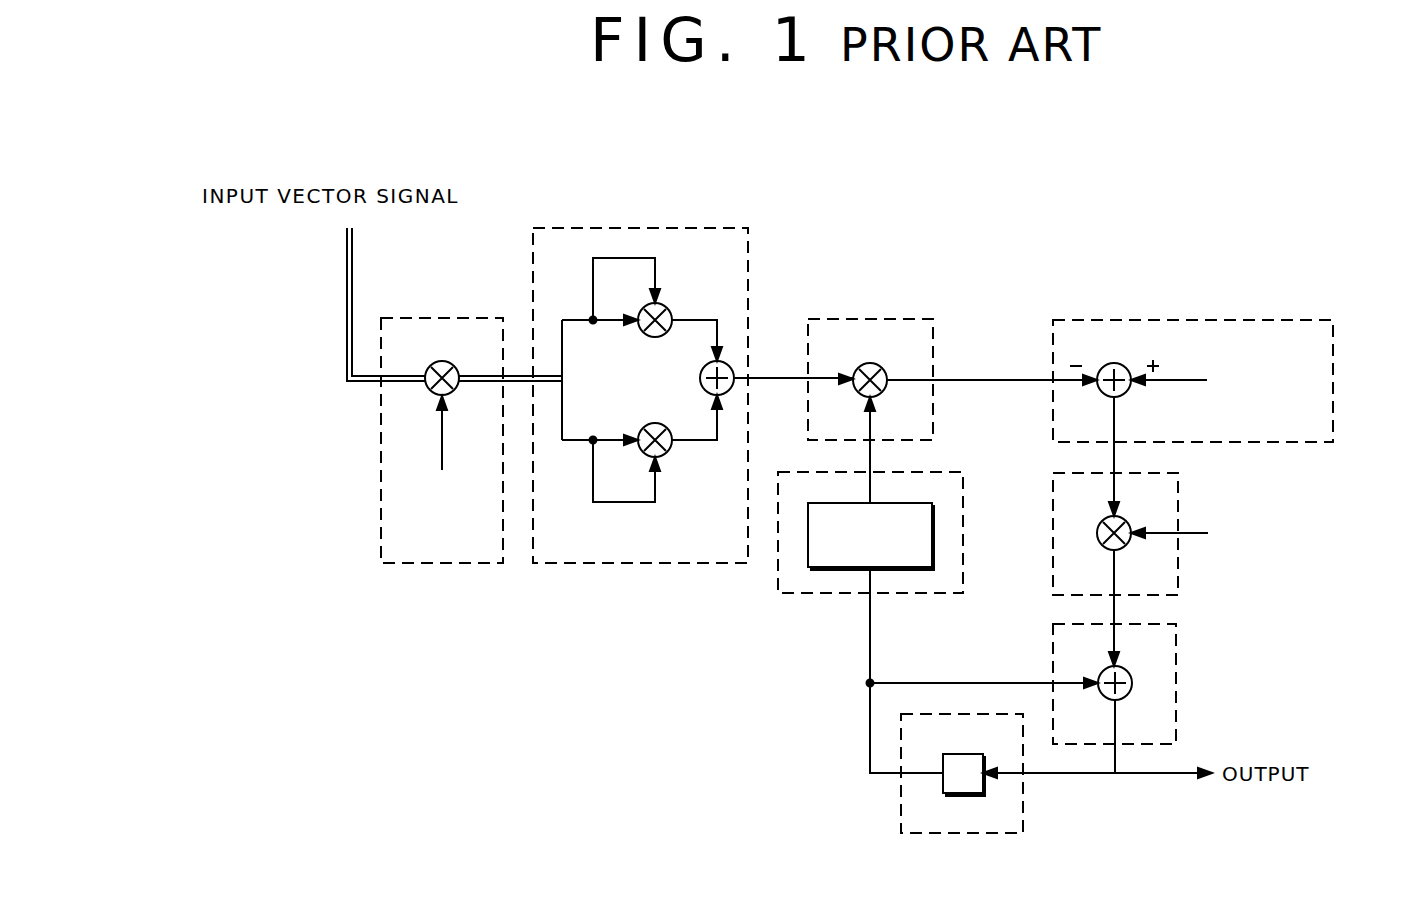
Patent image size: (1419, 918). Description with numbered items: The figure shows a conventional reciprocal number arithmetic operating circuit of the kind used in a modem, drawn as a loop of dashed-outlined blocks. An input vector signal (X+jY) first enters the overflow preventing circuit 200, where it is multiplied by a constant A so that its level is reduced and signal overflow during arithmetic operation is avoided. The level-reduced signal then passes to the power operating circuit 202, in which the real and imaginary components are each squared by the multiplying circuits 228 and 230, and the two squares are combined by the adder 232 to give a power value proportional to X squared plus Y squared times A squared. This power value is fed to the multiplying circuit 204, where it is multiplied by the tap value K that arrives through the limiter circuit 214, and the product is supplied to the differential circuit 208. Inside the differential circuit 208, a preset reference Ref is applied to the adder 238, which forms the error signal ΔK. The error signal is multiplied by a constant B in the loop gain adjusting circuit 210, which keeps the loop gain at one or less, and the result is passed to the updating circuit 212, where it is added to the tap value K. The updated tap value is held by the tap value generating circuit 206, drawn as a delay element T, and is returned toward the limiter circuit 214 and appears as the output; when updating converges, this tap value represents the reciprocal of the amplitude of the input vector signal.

The overflow preventing circuit 200 is at (445, 318).
The power operating circuit 202 is at (640, 362).
The multiplying circuit 204 is at (847, 319).
The tap value generating circuit 206 is at (943, 835).
The differential circuit 208 is at (1193, 347).
The loop gain adjusting circuit 210 is at (1178, 476).
The updating circuit 212 is at (1176, 630).
The limiter circuit 214 is at (815, 594).
The multiplying circuit 228 is at (674, 311).
The multiplying circuit 230 is at (672, 457).
The adder 232 is at (700, 378).
The adder 238 is at (1131, 393).